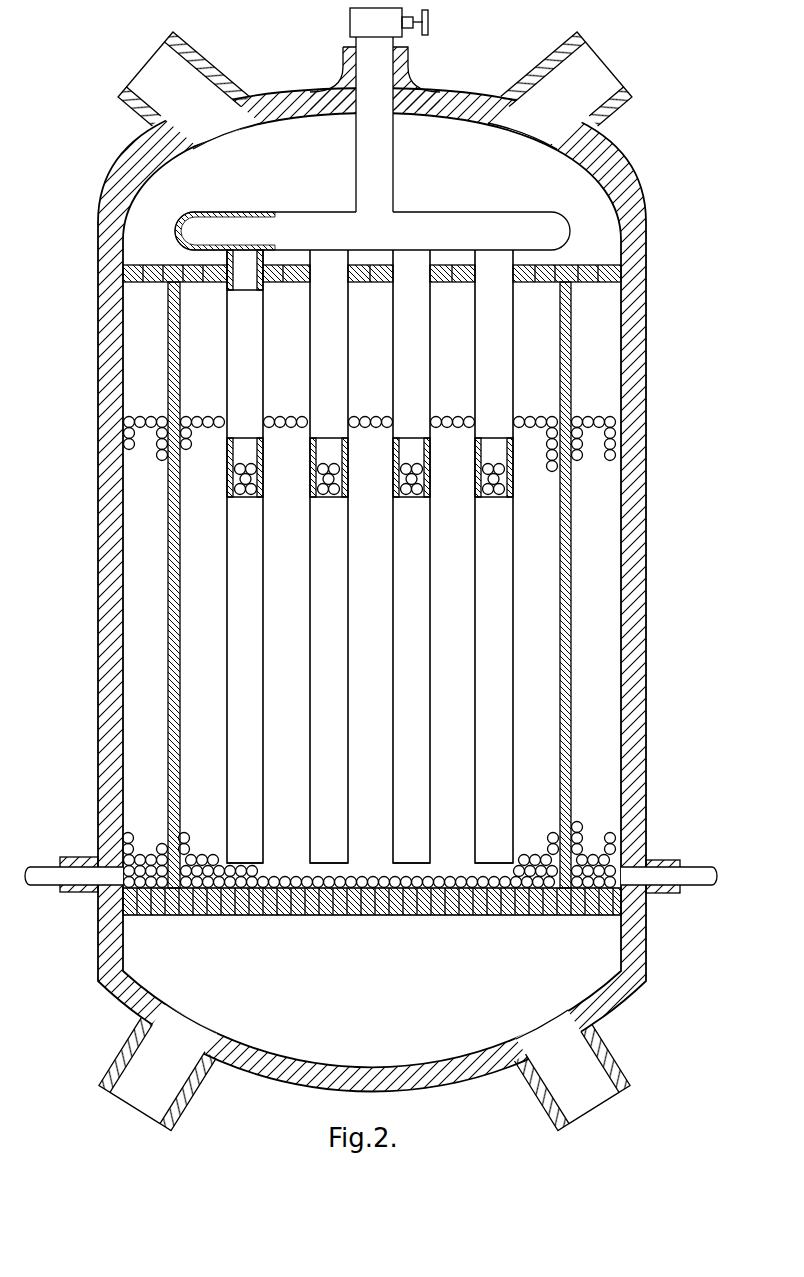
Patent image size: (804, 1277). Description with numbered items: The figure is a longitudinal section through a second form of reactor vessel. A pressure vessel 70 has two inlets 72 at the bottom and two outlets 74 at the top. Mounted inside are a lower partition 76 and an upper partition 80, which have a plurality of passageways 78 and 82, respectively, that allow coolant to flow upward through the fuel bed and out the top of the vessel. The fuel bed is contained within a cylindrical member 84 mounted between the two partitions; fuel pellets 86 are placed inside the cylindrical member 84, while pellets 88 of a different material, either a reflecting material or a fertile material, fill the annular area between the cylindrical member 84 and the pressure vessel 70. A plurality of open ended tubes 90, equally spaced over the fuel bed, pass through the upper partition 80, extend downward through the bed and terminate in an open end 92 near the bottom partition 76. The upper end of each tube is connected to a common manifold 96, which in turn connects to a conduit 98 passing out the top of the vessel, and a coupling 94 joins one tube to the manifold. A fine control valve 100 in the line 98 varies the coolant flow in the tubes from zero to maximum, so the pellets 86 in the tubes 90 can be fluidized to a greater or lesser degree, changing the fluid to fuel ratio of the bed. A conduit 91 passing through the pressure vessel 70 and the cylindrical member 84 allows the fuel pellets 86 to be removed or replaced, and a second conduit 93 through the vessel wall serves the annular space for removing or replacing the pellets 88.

The pressure vessel 70 is at (639, 684).
The inlets 72 is at (199, 1094).
The outlets 74 is at (203, 64).
The lower partition 76 is at (453, 914).
The passageways 78 is at (402, 916).
The upper partition 80 is at (134, 264).
The passageways 82 is at (175, 265).
The cylindrical member 84 is at (176, 668).
The fuel pellets 86 is at (246, 466).
The pellets 88 is at (125, 841).
The tubes 90 is at (313, 559).
The conduit 91 is at (690, 878).
The open end 92 is at (261, 865).
The second conduit 93 is at (37, 864).
The tube coupling 94 is at (232, 250).
The manifold 96 is at (308, 213).
The conduit 98 is at (393, 165).
The fine control valve 100 is at (429, 22).